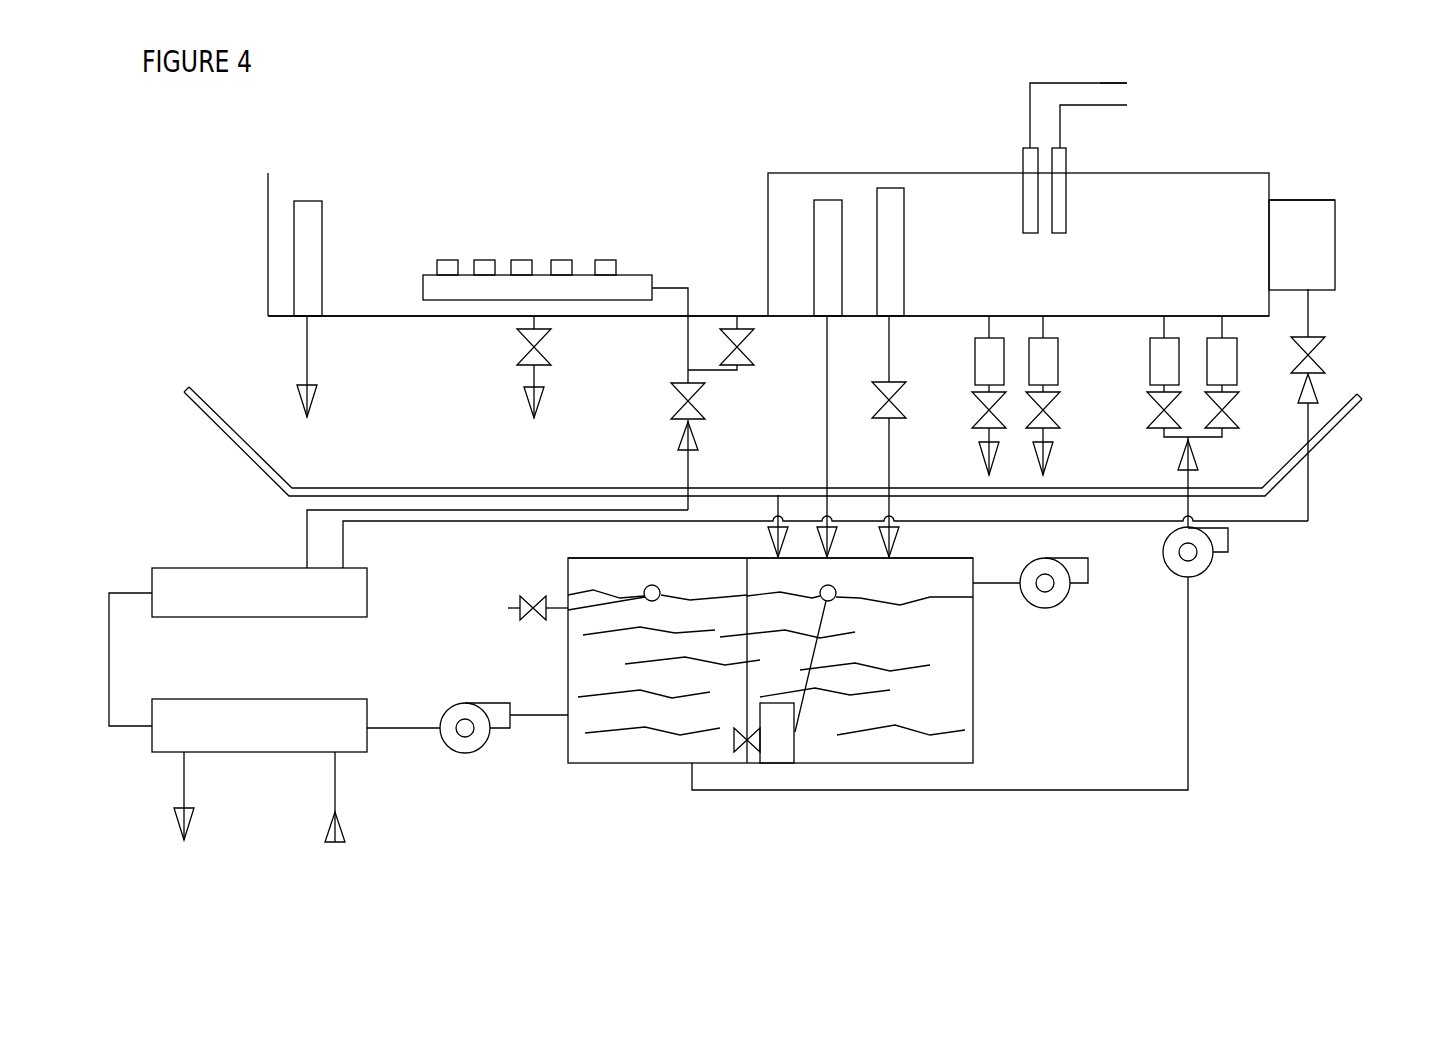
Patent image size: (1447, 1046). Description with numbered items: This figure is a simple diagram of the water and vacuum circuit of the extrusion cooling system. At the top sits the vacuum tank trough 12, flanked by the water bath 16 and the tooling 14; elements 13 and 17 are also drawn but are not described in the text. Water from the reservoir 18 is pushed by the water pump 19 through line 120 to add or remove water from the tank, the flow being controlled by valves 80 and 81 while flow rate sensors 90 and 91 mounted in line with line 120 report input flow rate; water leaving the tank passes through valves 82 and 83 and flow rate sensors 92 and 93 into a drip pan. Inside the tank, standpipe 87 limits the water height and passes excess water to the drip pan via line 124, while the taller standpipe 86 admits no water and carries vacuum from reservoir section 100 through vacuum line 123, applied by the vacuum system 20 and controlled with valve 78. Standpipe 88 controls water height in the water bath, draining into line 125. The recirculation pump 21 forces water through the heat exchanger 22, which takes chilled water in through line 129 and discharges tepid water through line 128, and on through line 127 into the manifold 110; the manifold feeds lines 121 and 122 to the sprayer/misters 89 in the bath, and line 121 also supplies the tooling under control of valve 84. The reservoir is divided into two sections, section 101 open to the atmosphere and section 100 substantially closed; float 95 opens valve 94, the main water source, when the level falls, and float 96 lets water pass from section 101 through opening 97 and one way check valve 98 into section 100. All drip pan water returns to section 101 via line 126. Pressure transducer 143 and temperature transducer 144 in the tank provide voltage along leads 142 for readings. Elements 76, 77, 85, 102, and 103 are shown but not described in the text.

The vacuum tank trough 12 is at (1215, 155).
The outlet housing 13 is at (1335, 243).
The tooling 14 is at (1323, 188).
The water bath 16 is at (510, 178).
The end wall 17 is at (268, 238).
The reservoir 18 is at (983, 692).
The water pump 19 is at (1207, 567).
The vacuum system 20 is at (1057, 605).
The recirculation pump 21 is at (462, 700).
The heat exchanger 22 is at (253, 698).
The valve 76 is at (748, 356).
The drain valve 77 is at (518, 353).
The valve 78 is at (895, 416).
The valve 80 is at (1239, 402).
The valve 81 is at (1147, 415).
The valve 82 is at (1053, 405).
The valve 83 is at (977, 402).
The valve 84 is at (1324, 353).
The valve 85 is at (672, 407).
The standpipe 86 is at (875, 187).
The standpipe 87 is at (813, 197).
The standpipe 88 is at (322, 210).
The sprayer/misters 89 is at (532, 260).
The flow rate sensor 90 is at (1237, 347).
The flow rate sensor 91 is at (1150, 370).
The flow rate sensor 92 is at (1058, 350).
The flow rate sensor 93 is at (975, 365).
The valve 94 is at (521, 596).
The float 95 is at (660, 590).
The float 96 is at (835, 590).
The opening 97 is at (733, 740).
The one way check valve 98 is at (796, 748).
The reservoir section 100 is at (952, 557).
The reservoir section 101 is at (627, 550).
The partition 102 is at (975, 588).
The collection pan 103 is at (183, 382).
The manifold 110 is at (230, 568).
The line 120 is at (1190, 710).
The line 121 is at (1308, 510).
The line 122 is at (307, 528).
The vacuum line 123 is at (888, 360).
The line 124 is at (827, 393).
The line 125 is at (307, 360).
The line 126 is at (775, 508).
The line 127 is at (109, 665).
The line 128 is at (184, 783).
The line 129 is at (335, 778).
The leads 142 is at (1128, 95).
The pressure transducer 143 is at (1050, 147).
The temperature transducer 144 is at (1022, 147).